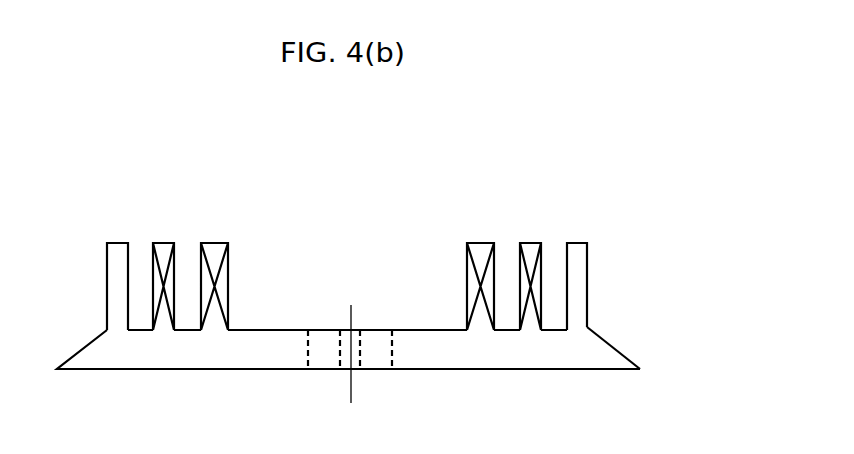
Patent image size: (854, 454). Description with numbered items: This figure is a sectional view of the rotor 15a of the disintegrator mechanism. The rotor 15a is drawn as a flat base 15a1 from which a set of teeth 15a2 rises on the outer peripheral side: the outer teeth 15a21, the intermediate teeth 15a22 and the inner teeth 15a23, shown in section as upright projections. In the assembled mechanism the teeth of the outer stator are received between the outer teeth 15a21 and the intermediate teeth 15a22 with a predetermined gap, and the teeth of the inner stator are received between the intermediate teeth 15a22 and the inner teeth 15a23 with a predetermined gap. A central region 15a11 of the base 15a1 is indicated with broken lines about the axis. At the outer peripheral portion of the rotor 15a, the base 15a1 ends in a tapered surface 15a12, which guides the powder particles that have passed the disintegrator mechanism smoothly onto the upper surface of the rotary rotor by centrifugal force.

The rotor 15a is at (400, 279).
The yoke portion 15a1 is at (348, 371).
The connecting portion of yoke 15a11 is at (323, 371).
The tapered surface 15a12 is at (620, 348).
The teeth portion 15a2 is at (510, 225).
The outer teeth 15a21 is at (608, 251).
The intermediate teeth 15a22 is at (527, 243).
The inner teeth 15a23 is at (477, 243).